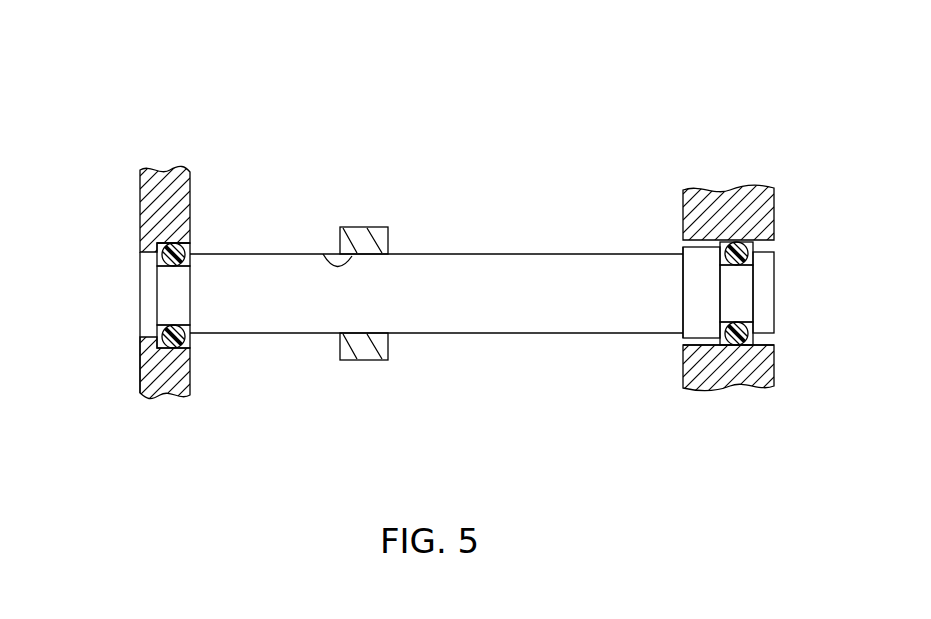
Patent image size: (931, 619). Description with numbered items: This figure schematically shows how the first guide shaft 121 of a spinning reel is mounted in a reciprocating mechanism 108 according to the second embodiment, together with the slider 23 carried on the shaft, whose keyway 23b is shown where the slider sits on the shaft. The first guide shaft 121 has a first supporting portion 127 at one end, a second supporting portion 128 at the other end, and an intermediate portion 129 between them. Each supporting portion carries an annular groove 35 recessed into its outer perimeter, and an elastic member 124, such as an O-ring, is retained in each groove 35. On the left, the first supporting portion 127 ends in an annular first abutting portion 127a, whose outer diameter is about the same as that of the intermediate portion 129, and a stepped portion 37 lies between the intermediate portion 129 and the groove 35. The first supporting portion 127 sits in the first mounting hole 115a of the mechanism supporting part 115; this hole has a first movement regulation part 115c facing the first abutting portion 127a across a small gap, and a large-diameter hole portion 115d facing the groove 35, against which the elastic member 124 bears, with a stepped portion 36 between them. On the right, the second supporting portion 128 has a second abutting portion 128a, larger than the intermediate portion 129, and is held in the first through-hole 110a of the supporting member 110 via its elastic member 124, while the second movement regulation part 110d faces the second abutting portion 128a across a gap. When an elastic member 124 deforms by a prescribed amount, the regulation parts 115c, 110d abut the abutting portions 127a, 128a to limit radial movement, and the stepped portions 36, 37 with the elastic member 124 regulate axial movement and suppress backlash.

The reciprocating mechanism 108 is at (598, 145).
The first guide shaft 121 is at (436, 280).
The intermediate portion 129 is at (500, 262).
The slider 23 is at (387, 226).
The keyway 23b is at (323, 240).
The mechanism supporting part 115 is at (175, 279).
The first mounting hole 115a is at (151, 258).
The first movement regulation part 115c is at (140, 262).
The large-diameter hole portion 115d is at (161, 243).
The first supporting portion 127 is at (117, 400).
The first abutting portion 127a is at (138, 390).
The elastic member 124 is at (466, 284).
The annular groove 35 is at (177, 348).
The stepped portion 36 is at (165, 348).
The stepped portion 37 is at (190, 264).
The second bearing holder 110 is at (732, 297).
The first through-hole 110a is at (762, 249).
The second movement regulation part 110d is at (683, 258).
The second supporting portion 128 is at (759, 368).
The second abutting portion 128a is at (698, 350).